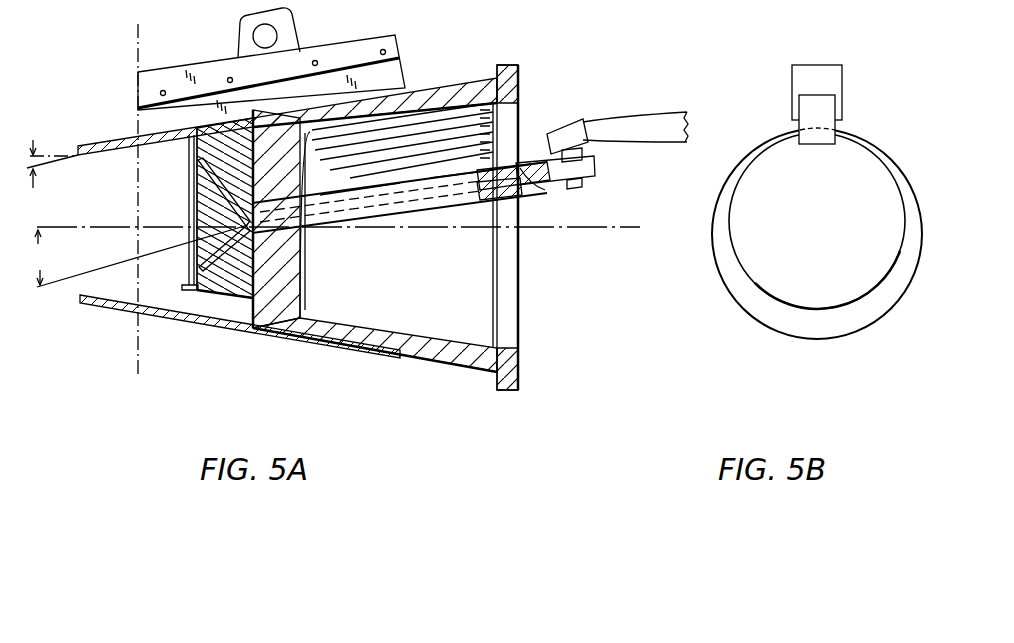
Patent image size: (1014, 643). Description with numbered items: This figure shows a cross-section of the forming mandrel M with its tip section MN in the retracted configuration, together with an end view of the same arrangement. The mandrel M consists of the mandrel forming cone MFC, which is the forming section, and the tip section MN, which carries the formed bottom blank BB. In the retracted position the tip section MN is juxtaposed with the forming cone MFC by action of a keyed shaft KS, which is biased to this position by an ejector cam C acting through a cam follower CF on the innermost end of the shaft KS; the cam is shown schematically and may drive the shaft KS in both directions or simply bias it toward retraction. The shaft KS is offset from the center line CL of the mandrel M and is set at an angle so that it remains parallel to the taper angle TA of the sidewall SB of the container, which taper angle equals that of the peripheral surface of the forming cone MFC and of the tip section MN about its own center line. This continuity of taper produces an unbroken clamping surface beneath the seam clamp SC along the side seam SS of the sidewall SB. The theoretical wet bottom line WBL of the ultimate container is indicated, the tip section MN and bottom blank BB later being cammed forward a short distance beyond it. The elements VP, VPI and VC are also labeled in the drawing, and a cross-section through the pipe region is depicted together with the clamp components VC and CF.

In FIG. 5A, the theoretical wet bottom line WBL is at (133, 188).
In FIG. 5A, the center line CL is at (428, 230).
In FIG. 5A, the taper angle TA is at (137, 213).
In FIG. 5A, the side seam SS is at (112, 142).
In FIG. 5A, the sidewall SB is at (213, 325).
In FIG. 5A, the seam clamp SC is at (253, 74).
In FIG. 5B, the seam clamp SC is at (832, 78).
In FIG. 5A, the mandrel M is at (449, 34).
In FIG. 5B, the mandrel M is at (741, 140).
In FIG. 5A, the mandrel forming cone MFC is at (312, 128).
In FIG. 5B, the mandrel forming cone MFC is at (728, 256).
In FIG. 5A, the bottom blank BB is at (200, 166).
In FIG. 5A, the tip section MN is at (243, 162).
In FIG. 5B, the tip section MN is at (800, 296).
In FIG. 5A, the vent pipe struts VPI is at (247, 176).
In FIG. 5A, the vent pipe VP is at (355, 205).
In FIG. 5A, the keyed shaft KS is at (362, 196).
In FIG. 5A, the vent clamp VC is at (520, 186).
In FIG. 5A, the cam follower CF is at (566, 130).
In FIG. 5A, the ejector cam C is at (657, 120).